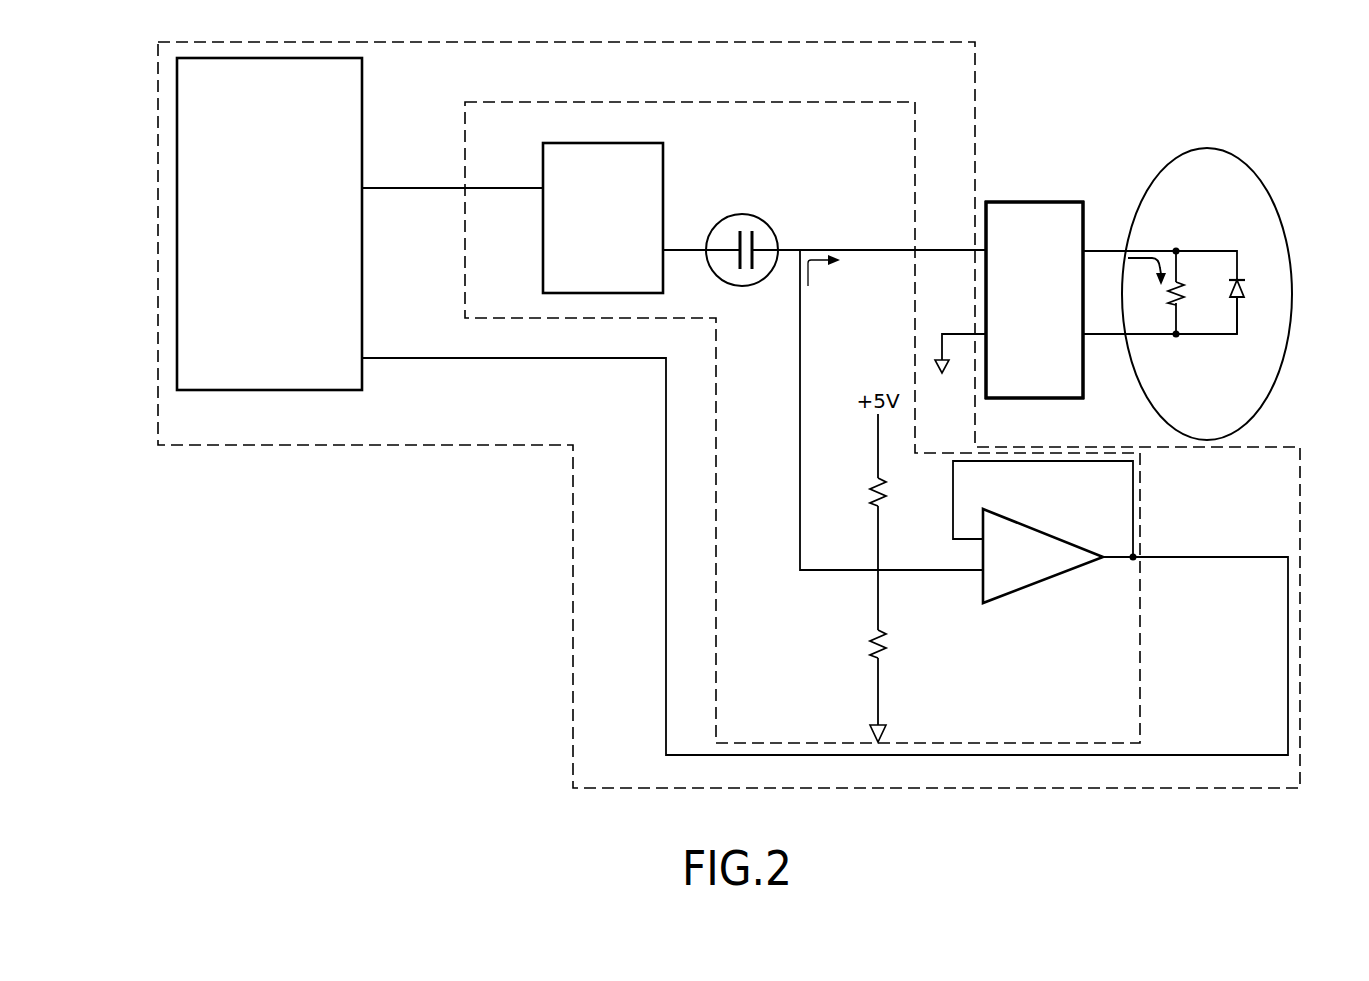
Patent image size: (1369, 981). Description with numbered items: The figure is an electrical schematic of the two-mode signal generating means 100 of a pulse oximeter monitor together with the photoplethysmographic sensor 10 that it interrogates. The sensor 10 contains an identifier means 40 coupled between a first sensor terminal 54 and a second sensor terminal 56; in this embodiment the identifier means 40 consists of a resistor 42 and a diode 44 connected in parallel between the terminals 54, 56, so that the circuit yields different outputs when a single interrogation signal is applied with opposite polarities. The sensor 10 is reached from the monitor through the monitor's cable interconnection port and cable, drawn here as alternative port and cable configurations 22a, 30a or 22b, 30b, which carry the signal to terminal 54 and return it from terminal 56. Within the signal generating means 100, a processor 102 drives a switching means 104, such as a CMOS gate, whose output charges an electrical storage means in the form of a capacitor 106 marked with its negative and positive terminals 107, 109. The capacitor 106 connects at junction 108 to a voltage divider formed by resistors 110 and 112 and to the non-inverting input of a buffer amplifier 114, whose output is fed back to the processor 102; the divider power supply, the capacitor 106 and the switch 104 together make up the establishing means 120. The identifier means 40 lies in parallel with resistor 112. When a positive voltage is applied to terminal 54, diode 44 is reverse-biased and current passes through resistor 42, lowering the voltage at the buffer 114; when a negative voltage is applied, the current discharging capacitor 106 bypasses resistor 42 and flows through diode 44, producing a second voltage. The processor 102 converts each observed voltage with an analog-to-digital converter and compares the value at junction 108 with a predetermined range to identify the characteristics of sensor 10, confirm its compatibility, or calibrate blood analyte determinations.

The photoplethysmographic sensor 10 is at (1260, 147).
The cable interconnection port 22a is at (1034, 300).
The cable 30a is at (1034, 300).
The cable interconnection port 22b is at (1034, 300).
The cable 30b is at (1034, 300).
The identifier means 40 is at (1257, 304).
The resistor 42 is at (1183, 278).
The diode 44 is at (1243, 278).
The first sensor terminal 54 is at (1128, 258).
The second sensor terminal 56 is at (1152, 336).
The signal generating means 100 is at (562, 560).
The processor 102 is at (281, 224).
The switching means 104 is at (603, 218).
The capacitor 106 is at (760, 210).
The capacitor negative terminal 107 is at (717, 228).
The junction 108 is at (792, 261).
The capacitor positive terminal 109 is at (781, 240).
The resistor 110 is at (870, 470).
The resistor 112 is at (880, 650).
The buffer amplifier 114 is at (1040, 578).
The establishing means 120 is at (705, 656).